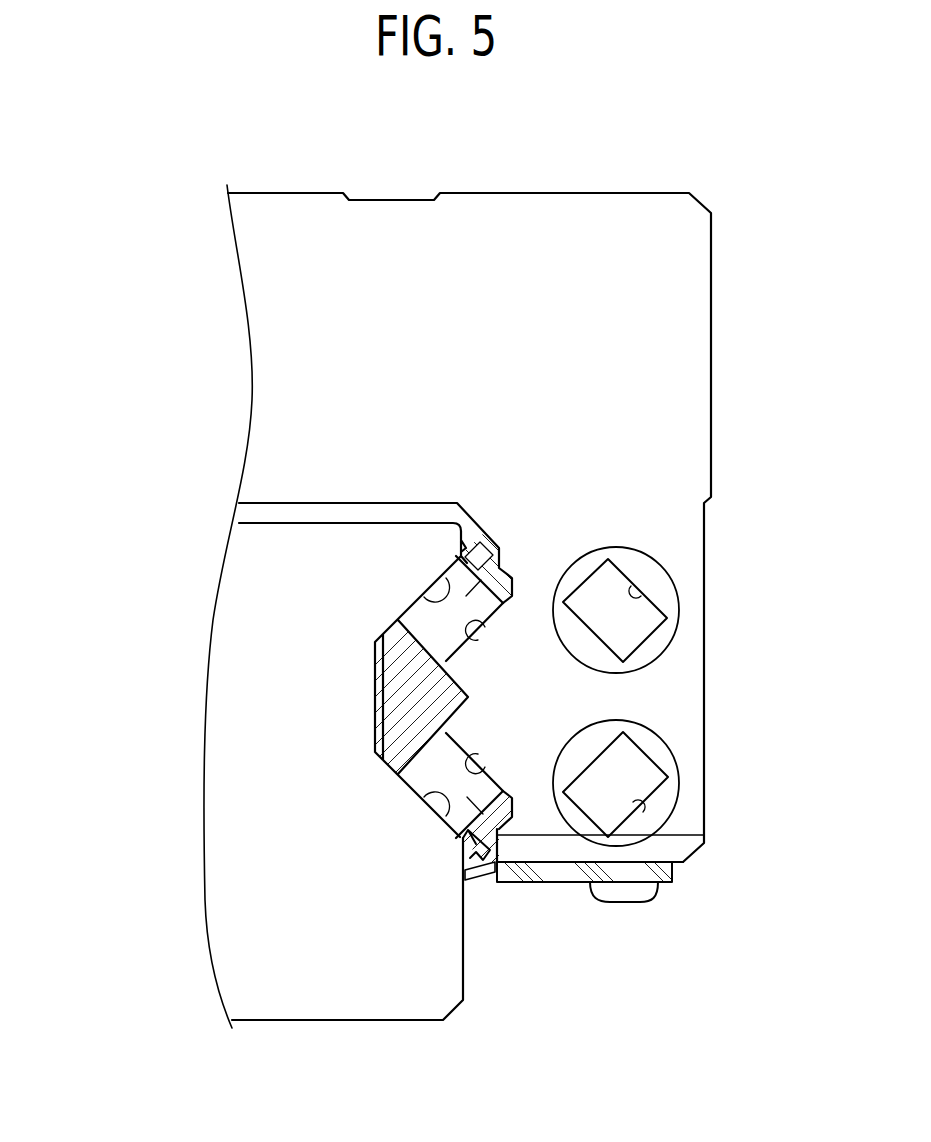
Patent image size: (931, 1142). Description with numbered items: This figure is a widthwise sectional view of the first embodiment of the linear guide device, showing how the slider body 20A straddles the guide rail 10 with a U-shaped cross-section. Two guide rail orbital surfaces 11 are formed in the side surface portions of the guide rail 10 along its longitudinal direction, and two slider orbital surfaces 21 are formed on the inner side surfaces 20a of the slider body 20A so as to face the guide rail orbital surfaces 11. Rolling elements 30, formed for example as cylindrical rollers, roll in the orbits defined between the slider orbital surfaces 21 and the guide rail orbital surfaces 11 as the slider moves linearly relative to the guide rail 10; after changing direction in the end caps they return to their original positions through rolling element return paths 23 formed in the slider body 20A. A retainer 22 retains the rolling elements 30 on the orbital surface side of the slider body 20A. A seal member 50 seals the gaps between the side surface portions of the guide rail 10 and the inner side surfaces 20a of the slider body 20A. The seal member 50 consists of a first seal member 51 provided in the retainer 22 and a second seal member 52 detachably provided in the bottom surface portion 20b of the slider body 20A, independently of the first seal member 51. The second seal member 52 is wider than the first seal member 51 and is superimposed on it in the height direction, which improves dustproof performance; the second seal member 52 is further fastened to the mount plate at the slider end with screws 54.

The guide rail 10 is at (363, 1020).
The guide rail orbital surface 11 is at (422, 595).
The slider body 20A is at (698, 337).
The inner side surface 20a is at (465, 843).
The bottom surface portion 20b is at (677, 863).
The slider orbital surface 21 is at (485, 627).
The retainer 22 is at (385, 694).
The rolling element return path 23 is at (641, 598).
The rolling element 30 is at (512, 578).
The seal member 50 is at (572, 931).
The first seal member 51 is at (483, 866).
The second seal member 52 is at (553, 876).
The screw 54 is at (623, 902).